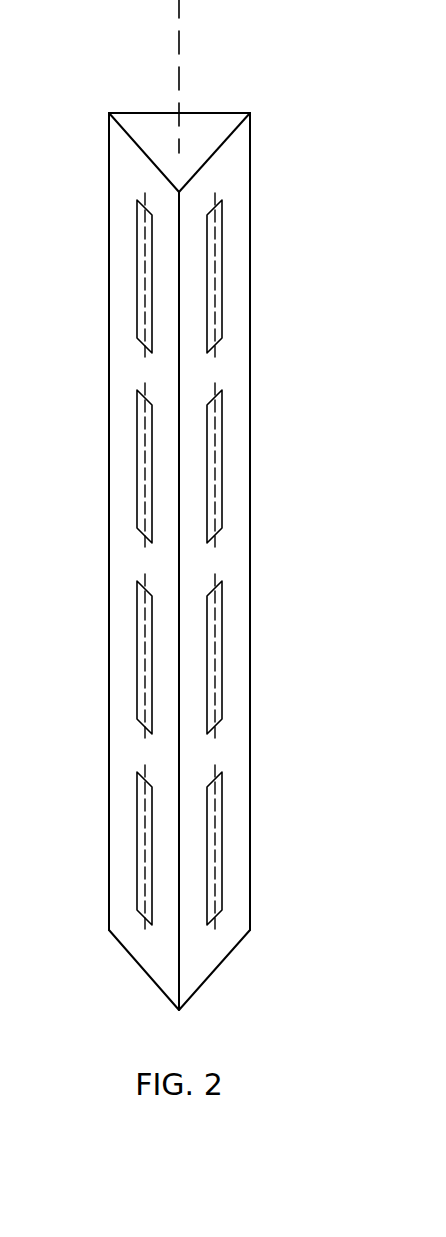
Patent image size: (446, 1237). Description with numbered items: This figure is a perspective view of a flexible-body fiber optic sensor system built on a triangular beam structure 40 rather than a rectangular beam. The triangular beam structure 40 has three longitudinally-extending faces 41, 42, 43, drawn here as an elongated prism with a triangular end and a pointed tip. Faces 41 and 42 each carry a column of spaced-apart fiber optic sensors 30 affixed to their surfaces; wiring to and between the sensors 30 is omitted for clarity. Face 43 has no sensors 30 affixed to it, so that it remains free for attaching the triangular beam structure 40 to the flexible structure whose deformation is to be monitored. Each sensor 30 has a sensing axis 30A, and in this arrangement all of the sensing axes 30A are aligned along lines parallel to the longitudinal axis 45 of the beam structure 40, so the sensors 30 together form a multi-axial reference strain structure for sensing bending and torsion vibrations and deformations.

The fiber optic sensor 30 is at (137, 420).
The sensing axis 30A is at (145, 455).
The triangular beam structure 40 is at (109, 572).
The face 41 is at (120, 153).
The face 42 is at (238, 366).
The face 43 is at (233, 113).
The longitudinal axis 45 is at (178, 33).